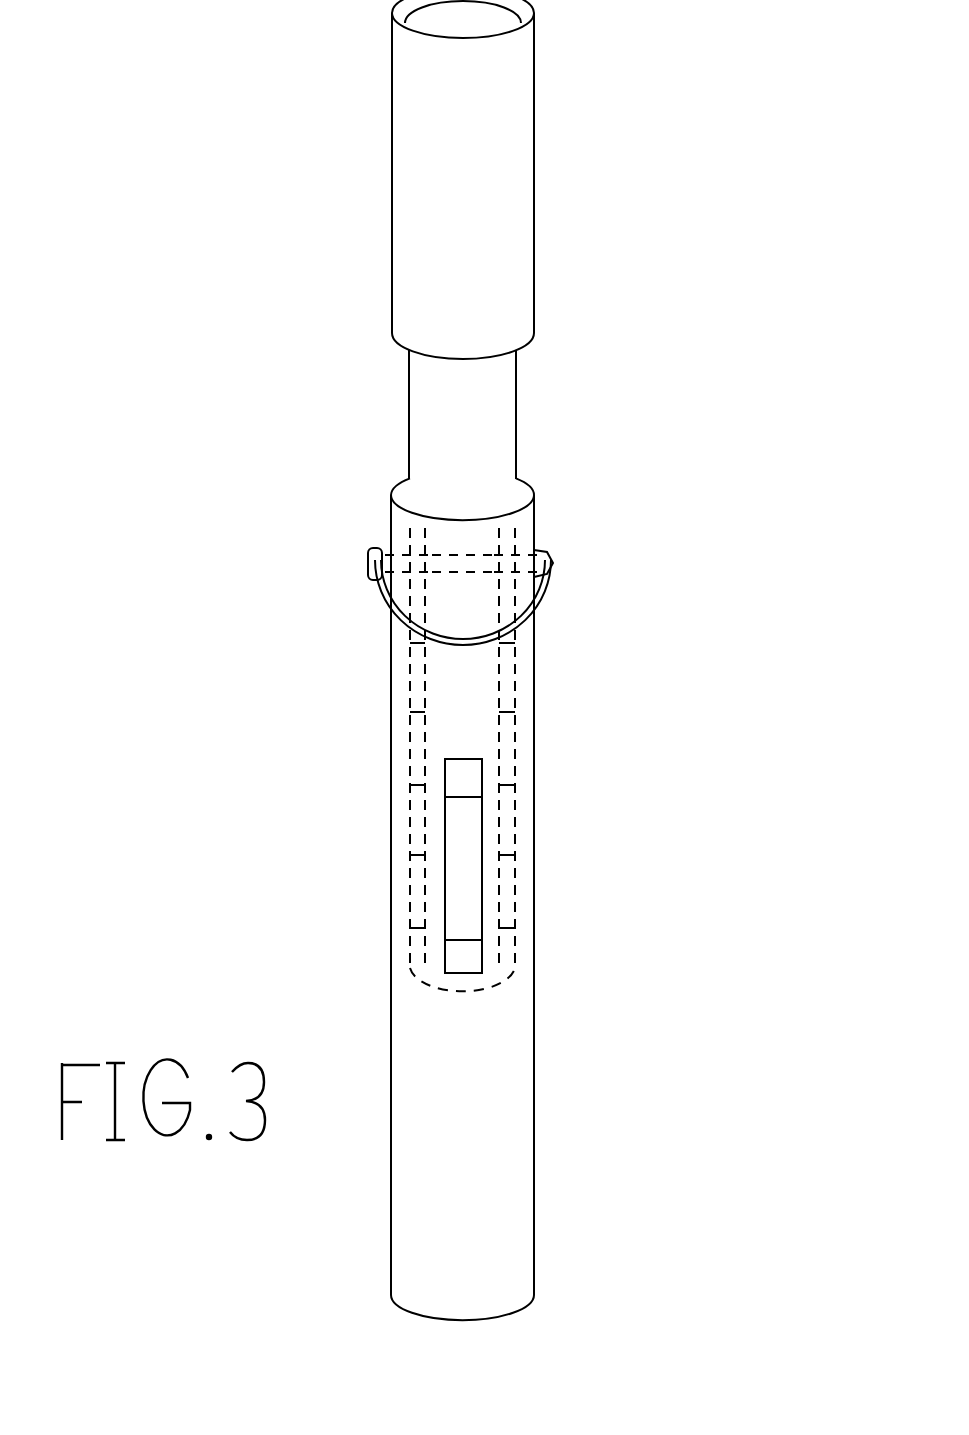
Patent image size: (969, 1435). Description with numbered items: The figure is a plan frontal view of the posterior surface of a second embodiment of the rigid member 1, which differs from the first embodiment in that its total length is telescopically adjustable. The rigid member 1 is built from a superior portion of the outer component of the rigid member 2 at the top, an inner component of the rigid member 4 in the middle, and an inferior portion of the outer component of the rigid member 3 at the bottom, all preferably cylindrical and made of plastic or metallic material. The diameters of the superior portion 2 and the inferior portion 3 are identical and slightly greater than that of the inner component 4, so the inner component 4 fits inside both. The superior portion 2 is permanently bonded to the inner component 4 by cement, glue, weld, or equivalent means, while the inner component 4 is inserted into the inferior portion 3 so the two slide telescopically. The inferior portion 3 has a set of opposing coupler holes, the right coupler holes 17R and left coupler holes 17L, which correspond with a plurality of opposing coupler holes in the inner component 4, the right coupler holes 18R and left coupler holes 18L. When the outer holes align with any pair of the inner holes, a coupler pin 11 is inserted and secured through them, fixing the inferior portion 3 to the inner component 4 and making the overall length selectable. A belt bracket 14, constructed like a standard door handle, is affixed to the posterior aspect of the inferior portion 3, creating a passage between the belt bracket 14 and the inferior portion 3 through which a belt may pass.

The rigid member 1 is at (223, 390).
The superior portion of the outer component of the rigid member 2 is at (535, 172).
The inferior portion of the outer component of the rigid member 3 is at (533, 1120).
The inner component of the rigid member 4 is at (516, 408).
The coupler pin 11 is at (368, 562).
The belt bracket 14 is at (462, 875).
The left coupler holes 17L is at (406, 556).
The right coupler holes 17R is at (523, 562).
The left coupler holes 18L is at (418, 574).
The right coupler holes 18R is at (510, 578).